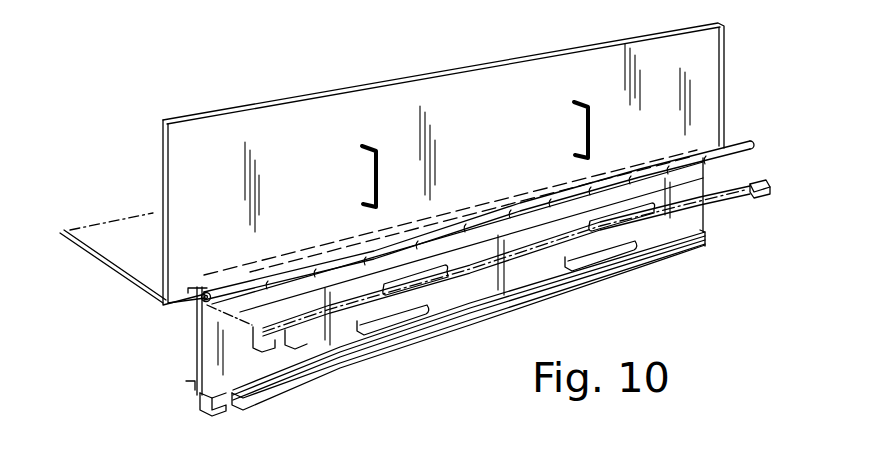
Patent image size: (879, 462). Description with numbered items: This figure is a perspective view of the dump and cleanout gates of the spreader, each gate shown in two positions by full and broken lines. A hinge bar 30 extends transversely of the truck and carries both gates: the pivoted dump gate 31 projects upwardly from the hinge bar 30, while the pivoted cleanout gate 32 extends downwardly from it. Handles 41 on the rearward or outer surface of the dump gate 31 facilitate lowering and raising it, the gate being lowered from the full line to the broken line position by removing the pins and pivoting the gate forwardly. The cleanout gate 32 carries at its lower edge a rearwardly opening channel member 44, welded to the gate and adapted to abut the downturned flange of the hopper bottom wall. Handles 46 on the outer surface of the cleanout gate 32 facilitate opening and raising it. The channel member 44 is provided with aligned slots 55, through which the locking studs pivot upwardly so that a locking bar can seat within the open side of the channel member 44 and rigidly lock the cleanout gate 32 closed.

The hinge bar 30 is at (742, 146).
The dump gate 31 is at (718, 72).
The cleanout gate 32 is at (728, 184).
The handles 41 is at (374, 191).
The channel member 44 is at (196, 407).
The handles 46 is at (412, 326).
The slot 55 is at (233, 405).